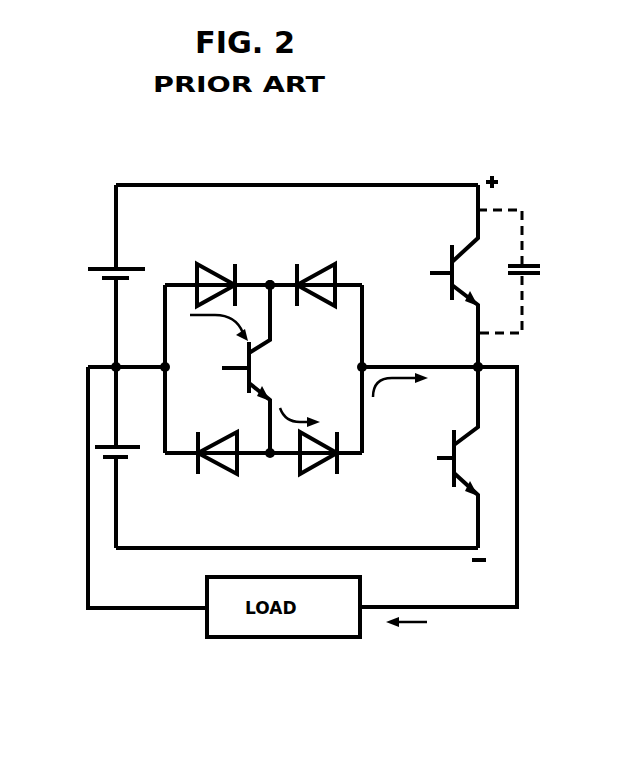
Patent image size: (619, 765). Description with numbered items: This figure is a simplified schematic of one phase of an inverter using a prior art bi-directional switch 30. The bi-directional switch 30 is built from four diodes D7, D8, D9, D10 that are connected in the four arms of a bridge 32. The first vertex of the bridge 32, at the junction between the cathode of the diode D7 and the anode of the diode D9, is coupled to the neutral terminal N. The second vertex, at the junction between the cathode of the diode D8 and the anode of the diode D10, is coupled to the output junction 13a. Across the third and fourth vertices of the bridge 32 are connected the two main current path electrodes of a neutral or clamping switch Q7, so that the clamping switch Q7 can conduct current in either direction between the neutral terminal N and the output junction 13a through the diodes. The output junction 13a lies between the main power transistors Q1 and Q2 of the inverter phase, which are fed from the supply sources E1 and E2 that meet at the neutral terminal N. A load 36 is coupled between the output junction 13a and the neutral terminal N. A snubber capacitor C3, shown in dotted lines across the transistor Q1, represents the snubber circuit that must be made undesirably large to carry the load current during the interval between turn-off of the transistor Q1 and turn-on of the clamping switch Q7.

The bi-directional switch 30 is at (262, 258).
The bridge 32 is at (364, 328).
The junction 13a is at (486, 360).
The load 36 is at (313, 640).
The diode D9 is at (197, 268).
The diode D10 is at (337, 264).
The diode D7 is at (226, 470).
The diode D8 is at (322, 470).
The clamping switch Q7 is at (255, 356).
The transistor Q1 is at (455, 258).
The transistor Q2 is at (474, 428).
The capacitor C3 is at (525, 268).
The voltage source E1 is at (103, 265).
The voltage source E2 is at (127, 460).
The neutral terminal N is at (126, 383).